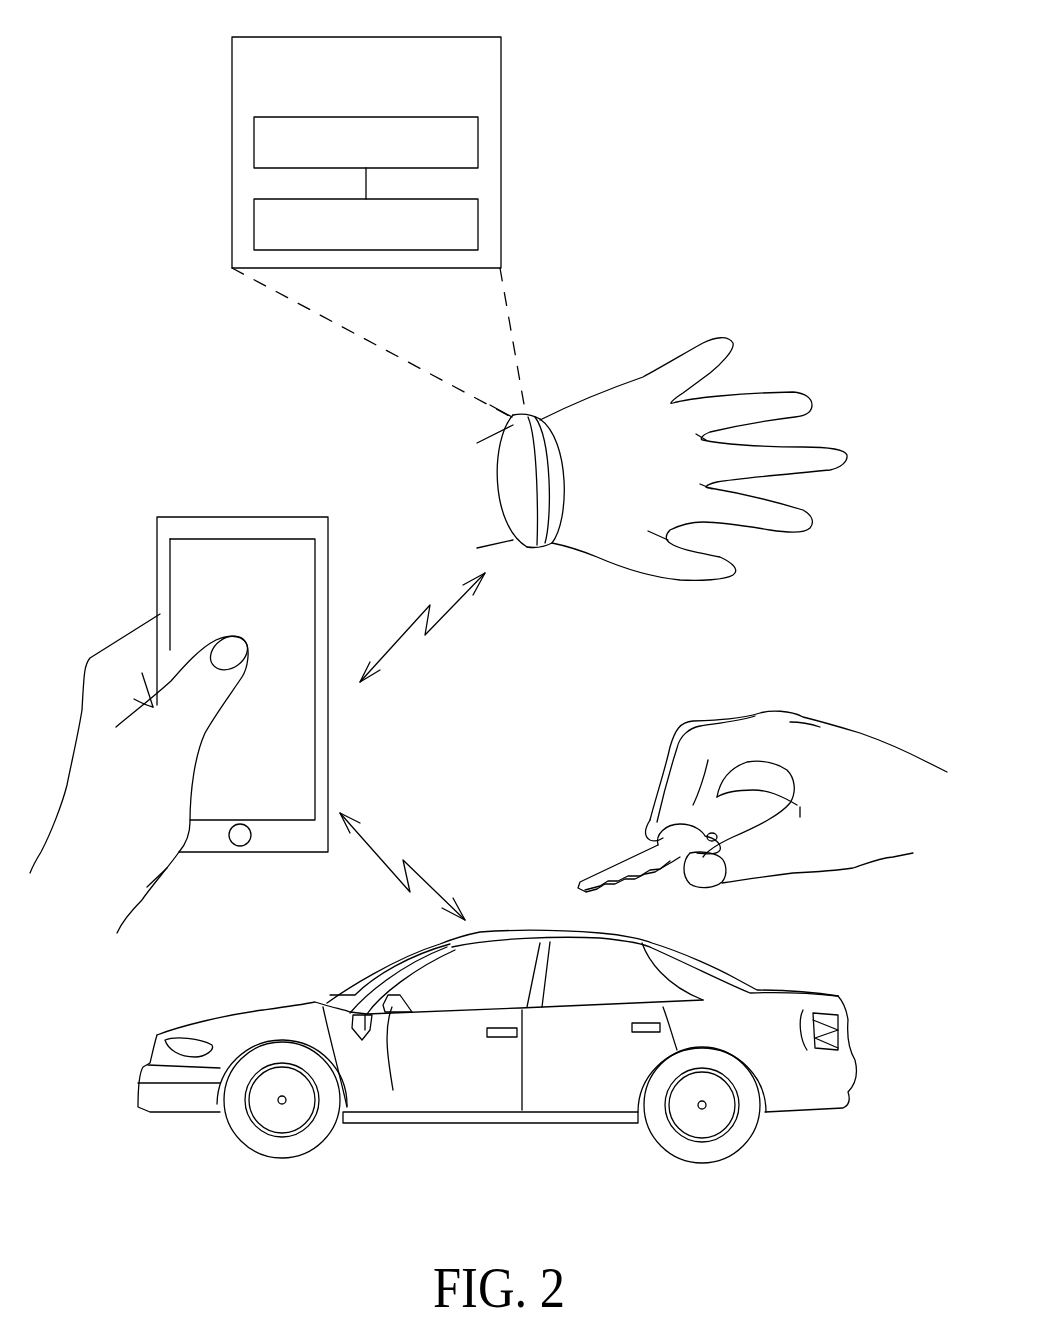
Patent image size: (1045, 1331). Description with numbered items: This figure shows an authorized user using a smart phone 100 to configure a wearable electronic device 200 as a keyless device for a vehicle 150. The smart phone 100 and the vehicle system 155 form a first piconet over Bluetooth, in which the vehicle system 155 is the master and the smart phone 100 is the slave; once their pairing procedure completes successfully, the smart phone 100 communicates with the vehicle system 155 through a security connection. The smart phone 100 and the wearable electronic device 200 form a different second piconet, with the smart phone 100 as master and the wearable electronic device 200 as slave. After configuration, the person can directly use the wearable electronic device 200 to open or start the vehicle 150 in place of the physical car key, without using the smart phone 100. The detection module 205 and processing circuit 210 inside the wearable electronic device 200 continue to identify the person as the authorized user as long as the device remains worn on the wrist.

The smart phone 100 is at (201, 517).
The vehicle 150 is at (803, 990).
The vehicle system 155 is at (393, 1090).
The wearable electronic device 200 is at (485, 37).
The detection module 205 is at (478, 142).
The processing circuit 210 is at (478, 224).